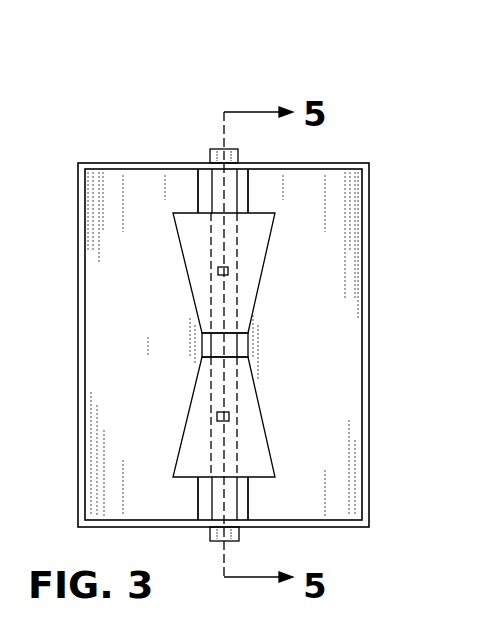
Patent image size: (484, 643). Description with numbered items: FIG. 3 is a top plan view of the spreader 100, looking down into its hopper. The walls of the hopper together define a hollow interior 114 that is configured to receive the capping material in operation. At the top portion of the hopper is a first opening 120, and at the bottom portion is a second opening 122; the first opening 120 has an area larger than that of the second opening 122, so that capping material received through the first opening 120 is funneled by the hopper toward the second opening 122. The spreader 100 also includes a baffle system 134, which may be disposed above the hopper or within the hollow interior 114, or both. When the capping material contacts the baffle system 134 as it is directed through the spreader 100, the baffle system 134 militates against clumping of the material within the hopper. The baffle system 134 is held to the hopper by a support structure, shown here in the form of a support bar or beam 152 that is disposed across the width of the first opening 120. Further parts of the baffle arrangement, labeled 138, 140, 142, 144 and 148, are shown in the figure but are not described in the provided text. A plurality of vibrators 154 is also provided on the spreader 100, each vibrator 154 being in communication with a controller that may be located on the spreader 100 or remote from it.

The spreader 100 is at (111, 104).
The hollow interior 114 is at (346, 268).
The first opening 120 is at (352, 210).
The second opening 122 is at (248, 345).
The upper shaft portion 144 is at (187, 212).
The support bar or beam 152 is at (198, 498).
The baffle system 134 is at (252, 365).
The upper cone 138 is at (224, 273).
The lower cone 140 is at (224, 417).
The hub 142 is at (249, 333).
The flow direction arrow 148 is at (192, 339).
The vibrators 154 is at (218, 272).